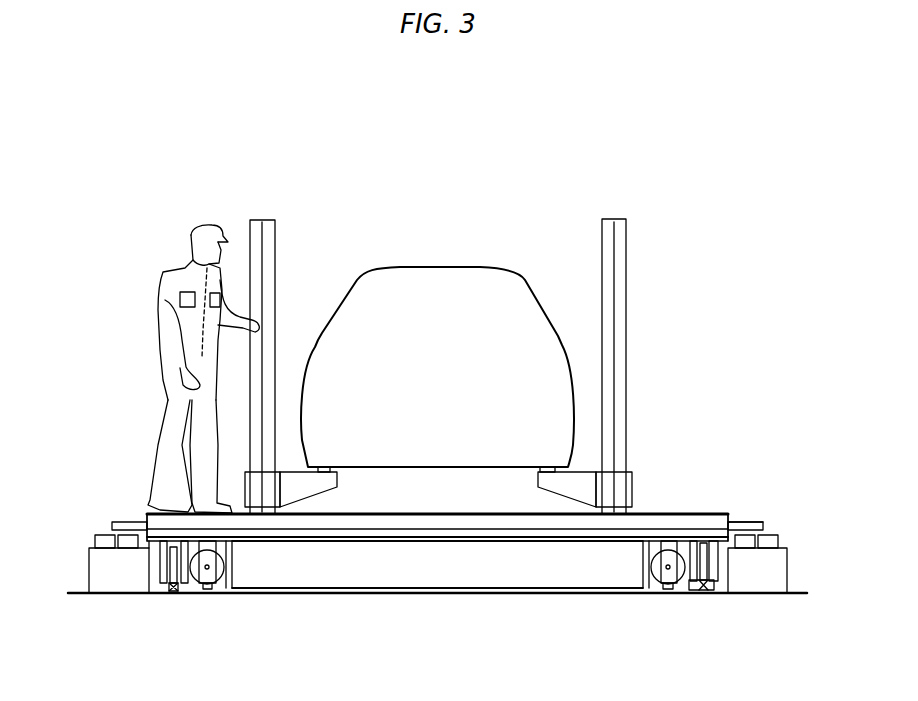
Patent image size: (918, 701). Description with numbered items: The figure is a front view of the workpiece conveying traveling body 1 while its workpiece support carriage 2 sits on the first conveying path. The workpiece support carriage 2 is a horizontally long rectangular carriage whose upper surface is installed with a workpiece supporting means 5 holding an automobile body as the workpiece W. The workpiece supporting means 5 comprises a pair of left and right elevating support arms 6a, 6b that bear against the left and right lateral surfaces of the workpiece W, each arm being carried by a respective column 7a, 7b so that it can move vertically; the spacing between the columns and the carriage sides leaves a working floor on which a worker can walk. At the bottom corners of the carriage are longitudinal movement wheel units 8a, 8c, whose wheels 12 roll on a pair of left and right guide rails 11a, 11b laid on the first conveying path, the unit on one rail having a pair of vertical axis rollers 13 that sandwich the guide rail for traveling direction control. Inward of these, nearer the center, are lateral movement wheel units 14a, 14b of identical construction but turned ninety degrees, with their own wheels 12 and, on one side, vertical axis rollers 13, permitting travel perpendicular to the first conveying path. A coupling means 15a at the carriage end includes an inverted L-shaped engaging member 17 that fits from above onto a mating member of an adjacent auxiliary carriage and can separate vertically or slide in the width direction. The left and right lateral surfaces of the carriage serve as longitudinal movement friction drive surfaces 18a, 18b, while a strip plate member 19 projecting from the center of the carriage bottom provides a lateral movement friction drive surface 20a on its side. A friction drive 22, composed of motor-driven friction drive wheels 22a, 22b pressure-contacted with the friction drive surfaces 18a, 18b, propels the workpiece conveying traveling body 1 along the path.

The workpiece conveying traveling body 1 is at (445, 503).
The workpiece support carriage 2 is at (400, 503).
The workpiece supporting means 5 is at (283, 277).
The elevating support arm 6a is at (550, 478).
The elevating support arm 6b is at (323, 480).
The column 7a is at (615, 302).
The column 7b is at (260, 400).
The longitudinal movement wheel unit 8a is at (727, 570).
The longitudinal movement wheel unit 8c is at (148, 562).
The guide rail 11a is at (702, 593).
The guide rail 11b is at (175, 593).
The wheel 12 is at (172, 575).
The vertical axis roller 13 is at (207, 589).
The lateral movement wheel unit 14a is at (242, 578).
The lateral movement wheel unit 14b is at (633, 573).
The coupling means 15a is at (503, 541).
The engaging member 17 is at (530, 522).
The longitudinal movement friction drive surface 18a is at (748, 517).
The longitudinal movement friction drive surface 18b is at (145, 520).
The strip plate member 19 is at (462, 592).
The lateral movement friction drive surface 20a is at (393, 577).
The friction drive 22 is at (765, 508).
The friction drive wheel 22a is at (763, 527).
The friction drive wheel 22b is at (112, 528).
The workpiece W is at (458, 267).